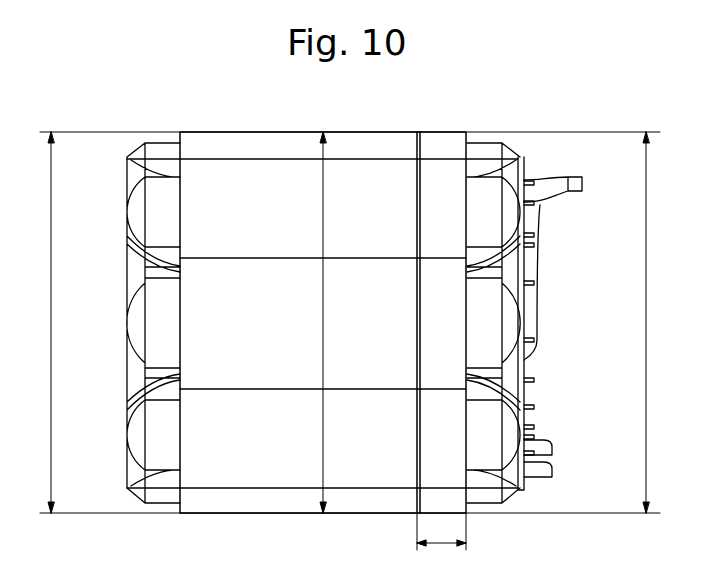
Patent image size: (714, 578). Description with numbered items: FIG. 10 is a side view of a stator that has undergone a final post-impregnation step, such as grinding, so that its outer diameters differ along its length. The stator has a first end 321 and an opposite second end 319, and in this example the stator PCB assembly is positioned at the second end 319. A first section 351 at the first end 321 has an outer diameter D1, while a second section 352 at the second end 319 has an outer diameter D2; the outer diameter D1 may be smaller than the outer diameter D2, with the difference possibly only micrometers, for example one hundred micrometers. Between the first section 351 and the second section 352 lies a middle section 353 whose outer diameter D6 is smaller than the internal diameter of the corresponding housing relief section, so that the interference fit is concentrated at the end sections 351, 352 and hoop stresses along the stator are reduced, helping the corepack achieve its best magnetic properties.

The second end 319 is at (524, 166).
The first end 321 is at (127, 157).
The first section 351 is at (127, 124).
The second section 352 is at (362, 124).
The section between the first and second sections 353 is at (245, 124).
The outer diameter of the first section D1 is at (33, 322).
The outer diameter of the second section D2 is at (663, 322).
The outer diameter of the middle section D6 is at (305, 322).